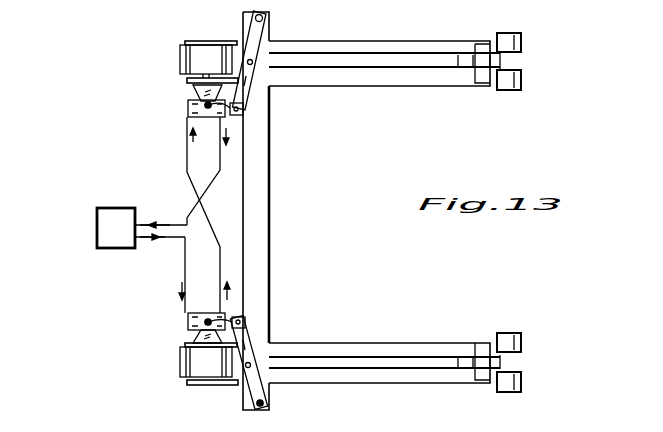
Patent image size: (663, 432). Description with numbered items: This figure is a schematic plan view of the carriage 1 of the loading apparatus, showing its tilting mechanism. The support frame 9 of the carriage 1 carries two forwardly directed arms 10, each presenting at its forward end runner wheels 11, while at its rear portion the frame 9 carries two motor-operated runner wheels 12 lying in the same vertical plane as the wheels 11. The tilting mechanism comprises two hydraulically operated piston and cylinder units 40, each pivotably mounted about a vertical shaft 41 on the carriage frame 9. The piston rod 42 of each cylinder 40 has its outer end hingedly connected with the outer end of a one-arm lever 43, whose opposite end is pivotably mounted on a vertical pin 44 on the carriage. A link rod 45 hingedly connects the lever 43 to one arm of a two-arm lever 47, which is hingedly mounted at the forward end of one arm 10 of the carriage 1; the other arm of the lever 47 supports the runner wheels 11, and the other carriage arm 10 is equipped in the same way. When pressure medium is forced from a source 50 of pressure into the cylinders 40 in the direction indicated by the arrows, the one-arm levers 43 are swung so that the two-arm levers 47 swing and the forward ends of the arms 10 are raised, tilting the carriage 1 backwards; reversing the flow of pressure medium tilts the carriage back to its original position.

The carriage 1 is at (269, 215).
The support frame 9 is at (197, 88).
The forwardly directed arm 10 is at (440, 77).
The runner wheels 11 is at (522, 80).
The motor-operated runner wheels 12 is at (200, 63).
The piston and cylinder unit 40 is at (188, 112).
The vertical shaft 41 is at (190, 113).
The piston rod 42 is at (240, 318).
The one-arm lever 43 is at (246, 60).
The vertical pin 44 is at (264, 403).
The link rod 45 is at (348, 63).
The two-arm lever 47 is at (508, 358).
The source of pressure 50 is at (110, 235).